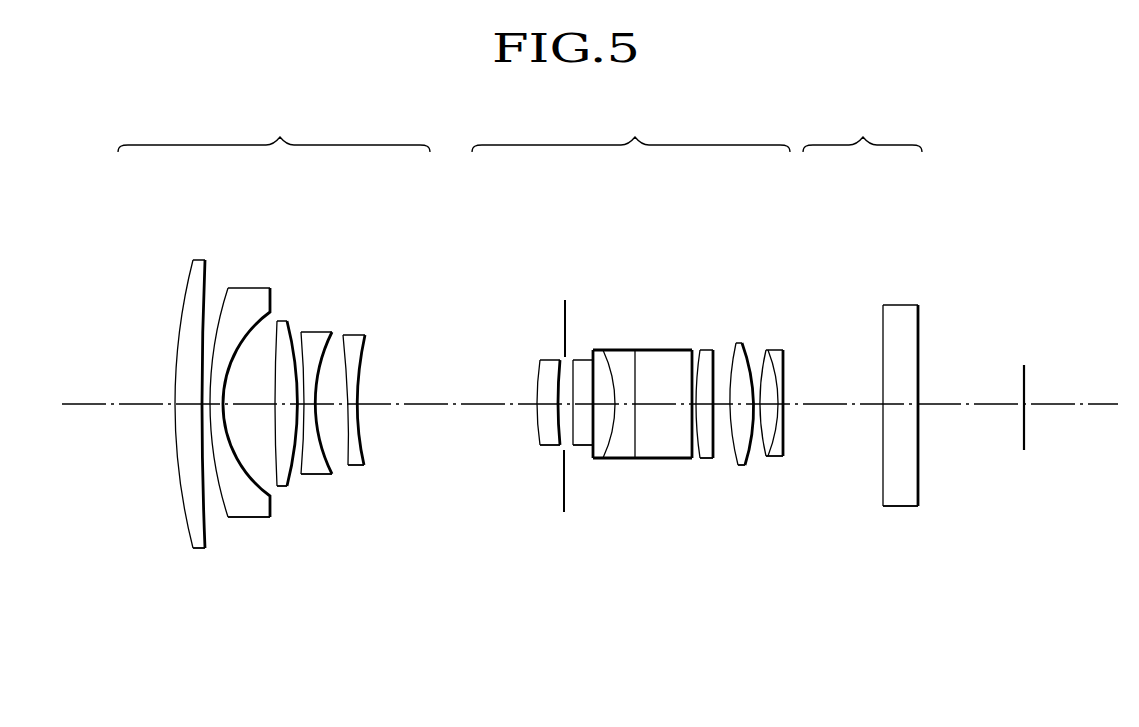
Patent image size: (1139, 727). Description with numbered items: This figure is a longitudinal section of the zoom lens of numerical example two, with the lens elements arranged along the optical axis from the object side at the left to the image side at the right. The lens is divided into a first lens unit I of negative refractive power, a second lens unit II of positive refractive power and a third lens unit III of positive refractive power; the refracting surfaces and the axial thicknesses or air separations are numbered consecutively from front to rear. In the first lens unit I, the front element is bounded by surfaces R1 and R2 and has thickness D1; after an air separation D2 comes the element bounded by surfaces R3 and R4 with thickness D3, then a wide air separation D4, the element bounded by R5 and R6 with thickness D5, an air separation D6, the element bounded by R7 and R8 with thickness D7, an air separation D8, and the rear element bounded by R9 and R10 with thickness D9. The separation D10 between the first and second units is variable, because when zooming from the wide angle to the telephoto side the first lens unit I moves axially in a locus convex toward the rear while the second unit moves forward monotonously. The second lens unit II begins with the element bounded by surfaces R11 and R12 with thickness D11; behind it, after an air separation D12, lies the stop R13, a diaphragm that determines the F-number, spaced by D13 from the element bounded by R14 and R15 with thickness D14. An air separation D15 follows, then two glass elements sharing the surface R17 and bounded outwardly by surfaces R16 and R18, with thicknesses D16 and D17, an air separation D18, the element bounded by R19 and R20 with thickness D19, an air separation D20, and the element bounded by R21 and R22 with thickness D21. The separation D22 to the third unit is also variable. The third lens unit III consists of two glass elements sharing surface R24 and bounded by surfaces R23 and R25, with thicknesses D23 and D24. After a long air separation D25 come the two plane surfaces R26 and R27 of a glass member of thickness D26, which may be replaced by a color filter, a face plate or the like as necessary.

The first lens unit I is at (274, 357).
The second lens unit II is at (637, 369).
The third lens unit III is at (841, 369).
The lens surface R1 is at (183, 317).
The lens surface R2 is at (204, 294).
The lens surface R3 is at (226, 300).
The lens surface R4 is at (259, 322).
The lens surface R5 is at (276, 340).
The lens surface R6 is at (289, 332).
The lens surface R7 is at (303, 335).
The lens surface R8 is at (331, 342).
The lens surface R9 is at (345, 340).
The lens surface R10 is at (368, 352).
The lens surface R11 is at (537, 380).
The lens surface R12 is at (559, 380).
The stop R13 is at (565, 331).
The lens surface R14 is at (573, 362).
The lens surface R15 is at (593, 380).
The lens surface R16 is at (603, 350).
The lens surface R17 is at (635, 350).
The lens surface R18 is at (691, 352).
The lens surface R19 is at (699, 352).
The lens surface R20 is at (713, 352).
The lens surface R21 is at (737, 347).
The lens surface R22 is at (748, 362).
The lens surface R23 is at (775, 365).
The lens surface R24 is at (784, 358).
The lens surface R25 is at (784, 368).
The lens surface R26 is at (883, 332).
The lens surface R27 is at (919, 324).
The axial thickness D1 is at (192, 432).
The air separation D2 is at (203, 430).
The axial thickness D3 is at (228, 430).
The air separation D4 is at (259, 430).
The axial thickness D5 is at (286, 430).
The air separation D6 is at (297, 435).
The axial thickness D7 is at (314, 435).
The air separation D8 is at (337, 435).
The axial thickness D9 is at (358, 435).
The variable air separation D10 is at (440, 404).
The axial thickness D11 is at (540, 446).
The air separation D12 is at (563, 452).
The air separation D13 is at (572, 446).
The axial thickness D14 is at (582, 446).
The air separation D15 is at (603, 459).
The axial thickness D16 is at (611, 459).
The axial thickness D17 is at (637, 459).
The air separation D18 is at (695, 458).
The axial thickness D19 is at (703, 458).
The air separation D20 is at (716, 458).
The axial thickness D21 is at (743, 466).
The variable air separation D22 is at (758, 458).
The axial thickness D23 is at (775, 458).
The axial thickness D24 is at (783, 458).
The air separation D25 is at (855, 407).
The axial thickness D26 is at (895, 407).